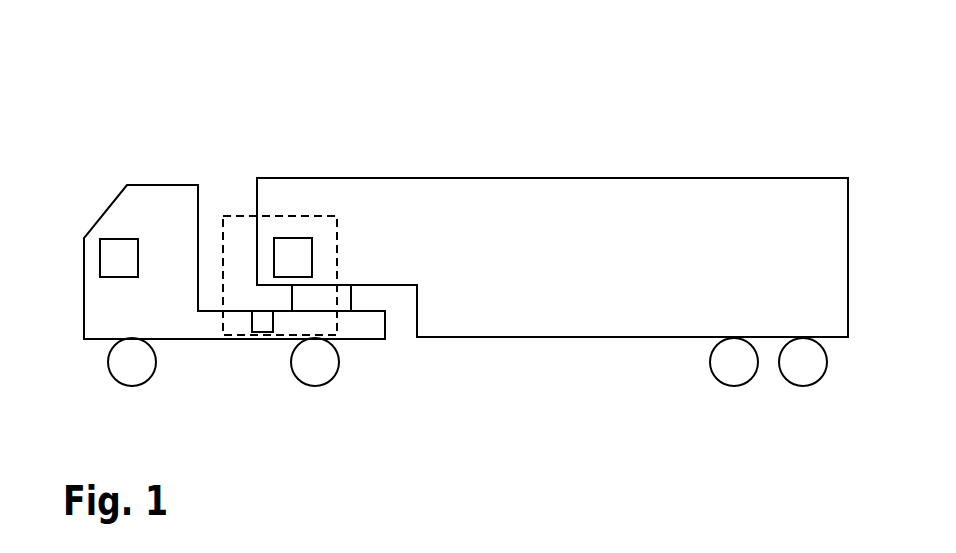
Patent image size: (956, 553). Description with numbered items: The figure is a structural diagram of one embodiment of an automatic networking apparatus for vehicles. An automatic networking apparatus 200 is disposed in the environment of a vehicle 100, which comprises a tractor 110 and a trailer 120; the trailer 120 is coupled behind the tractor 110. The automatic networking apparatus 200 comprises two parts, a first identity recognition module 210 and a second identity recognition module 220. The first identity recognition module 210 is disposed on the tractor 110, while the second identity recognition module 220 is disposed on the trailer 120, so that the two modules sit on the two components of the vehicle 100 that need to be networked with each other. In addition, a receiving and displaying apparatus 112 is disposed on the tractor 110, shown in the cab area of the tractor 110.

The vehicle 100 is at (166, 105).
The tractor 110 is at (158, 190).
The receiving and displaying apparatus 112 is at (112, 244).
The trailer 120 is at (583, 185).
The automatic networking apparatus 200 is at (338, 246).
The first identity recognition module 210 is at (262, 317).
The second identity recognition module 220 is at (290, 238).